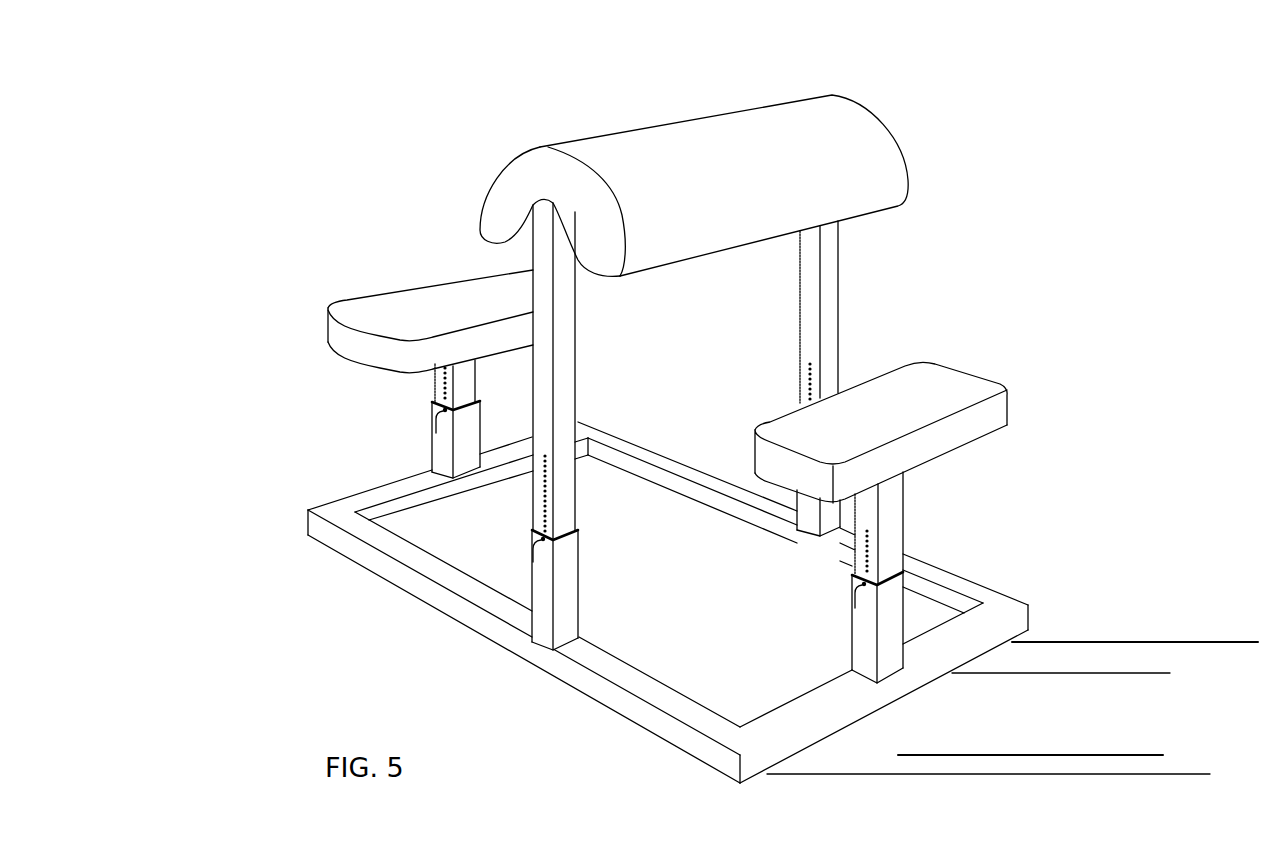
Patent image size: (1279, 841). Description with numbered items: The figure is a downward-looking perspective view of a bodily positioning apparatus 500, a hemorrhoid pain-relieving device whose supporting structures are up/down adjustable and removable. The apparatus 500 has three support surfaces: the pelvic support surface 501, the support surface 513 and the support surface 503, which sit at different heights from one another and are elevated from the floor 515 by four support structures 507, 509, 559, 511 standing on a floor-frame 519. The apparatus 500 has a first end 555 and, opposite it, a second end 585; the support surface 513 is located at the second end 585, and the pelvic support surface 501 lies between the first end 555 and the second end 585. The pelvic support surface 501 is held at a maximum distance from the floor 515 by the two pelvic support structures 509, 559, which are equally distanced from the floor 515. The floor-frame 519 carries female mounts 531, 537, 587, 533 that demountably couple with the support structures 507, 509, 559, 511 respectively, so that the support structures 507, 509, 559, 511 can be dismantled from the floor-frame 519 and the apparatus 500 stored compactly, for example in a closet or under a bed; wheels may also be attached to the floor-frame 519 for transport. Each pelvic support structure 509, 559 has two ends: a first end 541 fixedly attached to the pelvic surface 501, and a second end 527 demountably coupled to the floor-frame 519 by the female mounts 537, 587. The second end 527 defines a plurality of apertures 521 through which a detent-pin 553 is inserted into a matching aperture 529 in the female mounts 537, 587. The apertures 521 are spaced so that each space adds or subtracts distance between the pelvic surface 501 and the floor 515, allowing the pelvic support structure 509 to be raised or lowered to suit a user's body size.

The bodily positioning apparatus 500 is at (1067, 120).
The pelvic support surface 501 is at (775, 122).
The support surface 503 is at (425, 297).
The support surface 513 is at (918, 393).
The support structure 507 is at (466, 376).
The female mount 531 is at (445, 443).
The pelvic support structure 509 is at (560, 372).
The female mount 537 is at (568, 583).
The support structure 511 is at (890, 547).
The female mount 533 is at (888, 638).
The pelvic support structure 559 is at (810, 310).
The female mount 587 is at (807, 516).
The plurality of apertures 521 is at (803, 365).
The matching aperture 529 is at (544, 538).
The detent-pin 553 is at (531, 547).
The second end 527 is at (595, 537).
The first end 541 is at (792, 253).
The first end 555 is at (285, 532).
The floor-frame 519 is at (422, 585).
The second end 585 is at (672, 773).
The floor 515 is at (1087, 673).